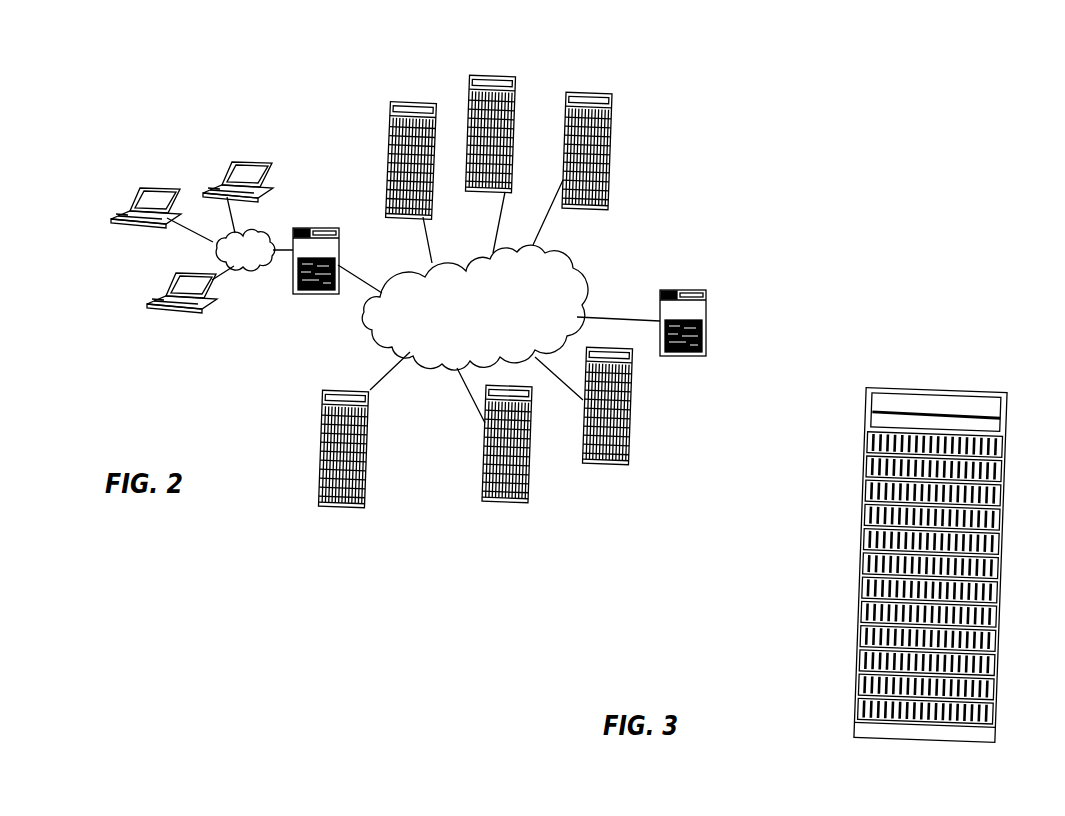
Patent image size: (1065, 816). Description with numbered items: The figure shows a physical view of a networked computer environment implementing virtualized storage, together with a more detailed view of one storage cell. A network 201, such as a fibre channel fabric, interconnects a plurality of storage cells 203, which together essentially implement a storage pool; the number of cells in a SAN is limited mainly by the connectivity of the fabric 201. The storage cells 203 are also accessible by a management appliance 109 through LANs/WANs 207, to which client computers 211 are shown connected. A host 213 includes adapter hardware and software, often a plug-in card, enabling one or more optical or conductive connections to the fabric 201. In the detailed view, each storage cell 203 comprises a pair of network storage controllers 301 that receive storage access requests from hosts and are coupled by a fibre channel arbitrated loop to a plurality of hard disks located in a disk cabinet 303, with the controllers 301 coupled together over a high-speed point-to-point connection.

In FIG. 2, the management appliance 109 is at (318, 227).
In FIG. 2, the network 201 is at (560, 247).
In FIG. 2, the storage cell 203 is at (388, 108).
In FIG. 3, the storage cell 203 is at (958, 306).
In FIG. 2, the LANs/WANs 207 is at (257, 266).
In FIG. 2, the client computers 211 is at (130, 220).
In FIG. 2, the host 213 is at (708, 328).
In FIG. 3, the network storage controller 301 is at (882, 398).
In FIG. 3, the disk cabinet 303 is at (870, 611).